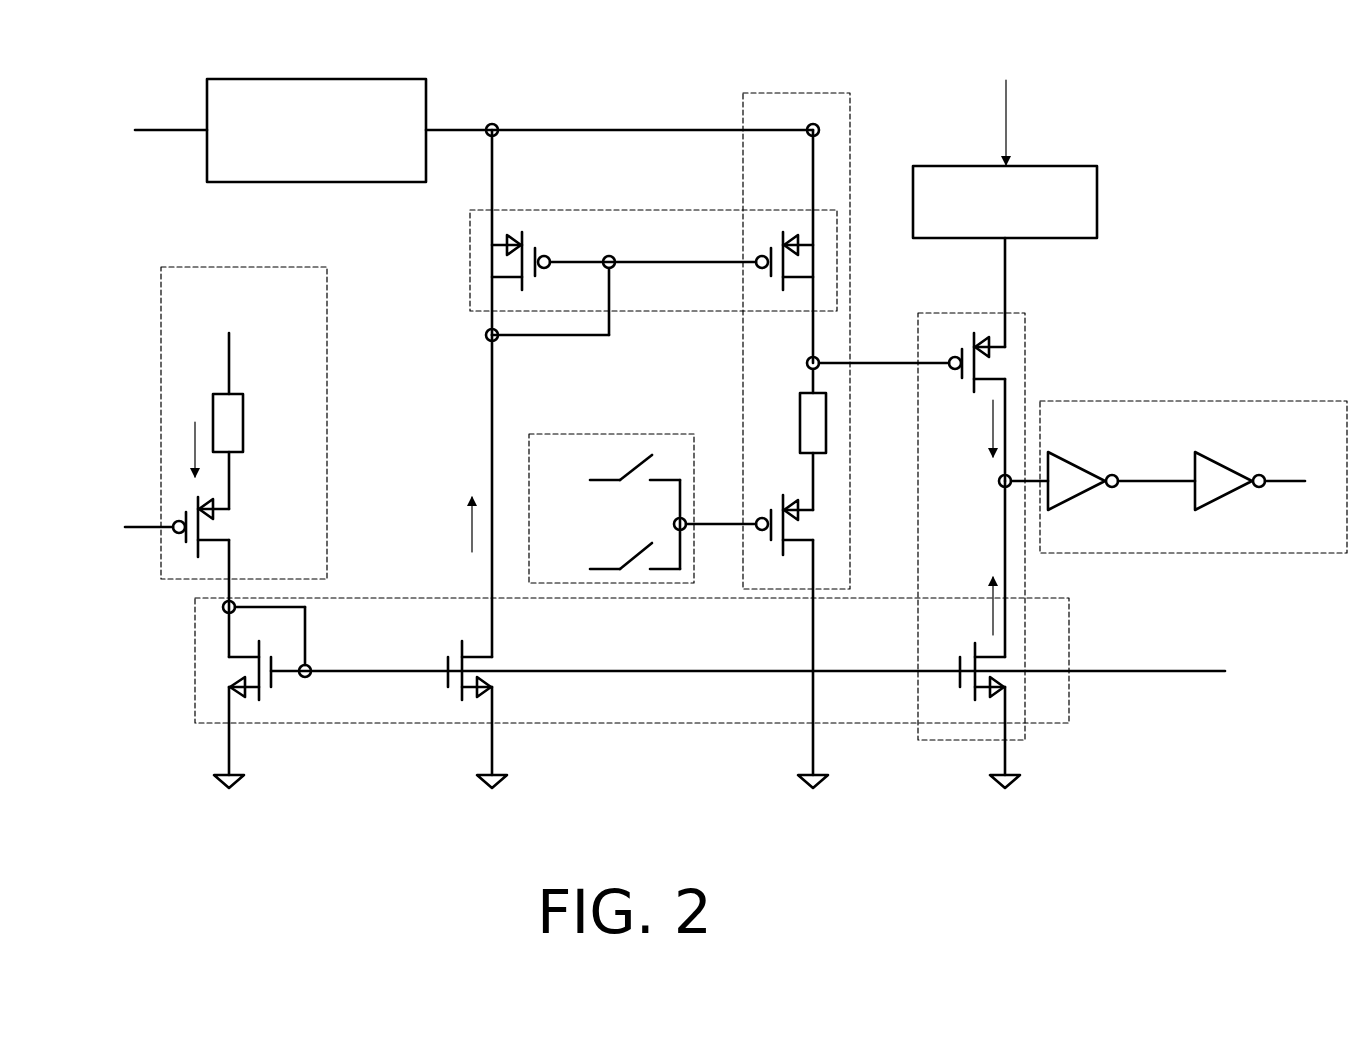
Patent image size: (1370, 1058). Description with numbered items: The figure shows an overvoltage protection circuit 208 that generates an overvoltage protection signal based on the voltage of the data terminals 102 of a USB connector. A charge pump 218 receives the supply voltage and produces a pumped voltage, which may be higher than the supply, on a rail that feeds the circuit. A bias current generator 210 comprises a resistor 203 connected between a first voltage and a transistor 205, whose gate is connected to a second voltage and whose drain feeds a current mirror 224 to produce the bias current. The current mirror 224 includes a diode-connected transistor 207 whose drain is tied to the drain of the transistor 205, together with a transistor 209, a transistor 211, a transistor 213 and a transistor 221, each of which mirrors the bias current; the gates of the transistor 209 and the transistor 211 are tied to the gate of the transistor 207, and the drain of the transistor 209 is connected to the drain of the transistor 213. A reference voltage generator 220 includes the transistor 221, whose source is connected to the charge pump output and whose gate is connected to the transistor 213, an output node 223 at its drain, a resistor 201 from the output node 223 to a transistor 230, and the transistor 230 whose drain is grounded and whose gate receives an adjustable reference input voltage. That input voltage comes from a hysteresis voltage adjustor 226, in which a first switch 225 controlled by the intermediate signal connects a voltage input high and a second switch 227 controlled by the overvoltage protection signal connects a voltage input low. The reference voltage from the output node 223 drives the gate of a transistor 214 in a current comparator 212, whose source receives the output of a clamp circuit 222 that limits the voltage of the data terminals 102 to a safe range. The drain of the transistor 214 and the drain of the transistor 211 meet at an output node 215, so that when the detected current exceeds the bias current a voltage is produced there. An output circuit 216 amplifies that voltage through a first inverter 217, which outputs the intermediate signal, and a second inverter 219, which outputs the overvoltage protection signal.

The overvoltage protection circuit 208 is at (148, 33).
The charge pump 218 is at (316, 130).
The clamp circuit 222 is at (1005, 256).
The data terminals 102 is at (994, 99).
The reference voltage generator 220 is at (853, 70).
The current mirror 224 is at (471, 268).
The bias current generator 210 is at (165, 267).
The current comparator 212 is at (962, 313).
The output circuit 216 is at (1222, 401).
The hysteresis voltage adjustor 226 is at (574, 434).
The first switch 225 is at (636, 459).
The second switch 227 is at (636, 567).
The transistor 213 is at (538, 238).
The transistor 221 is at (771, 238).
The output node 223 is at (810, 363).
The resistor 201 is at (800, 425).
The transistor 230 is at (818, 520).
The transistor 214 is at (1008, 351).
The output node 215 is at (997, 488).
The first inverter 217 is at (1086, 490).
The second inverter 219 is at (1232, 495).
The resistor 203 is at (245, 425).
The transistor 205 is at (232, 518).
The transistor 207 is at (273, 701).
The transistor 209 is at (500, 661).
The transistor 211 is at (966, 694).